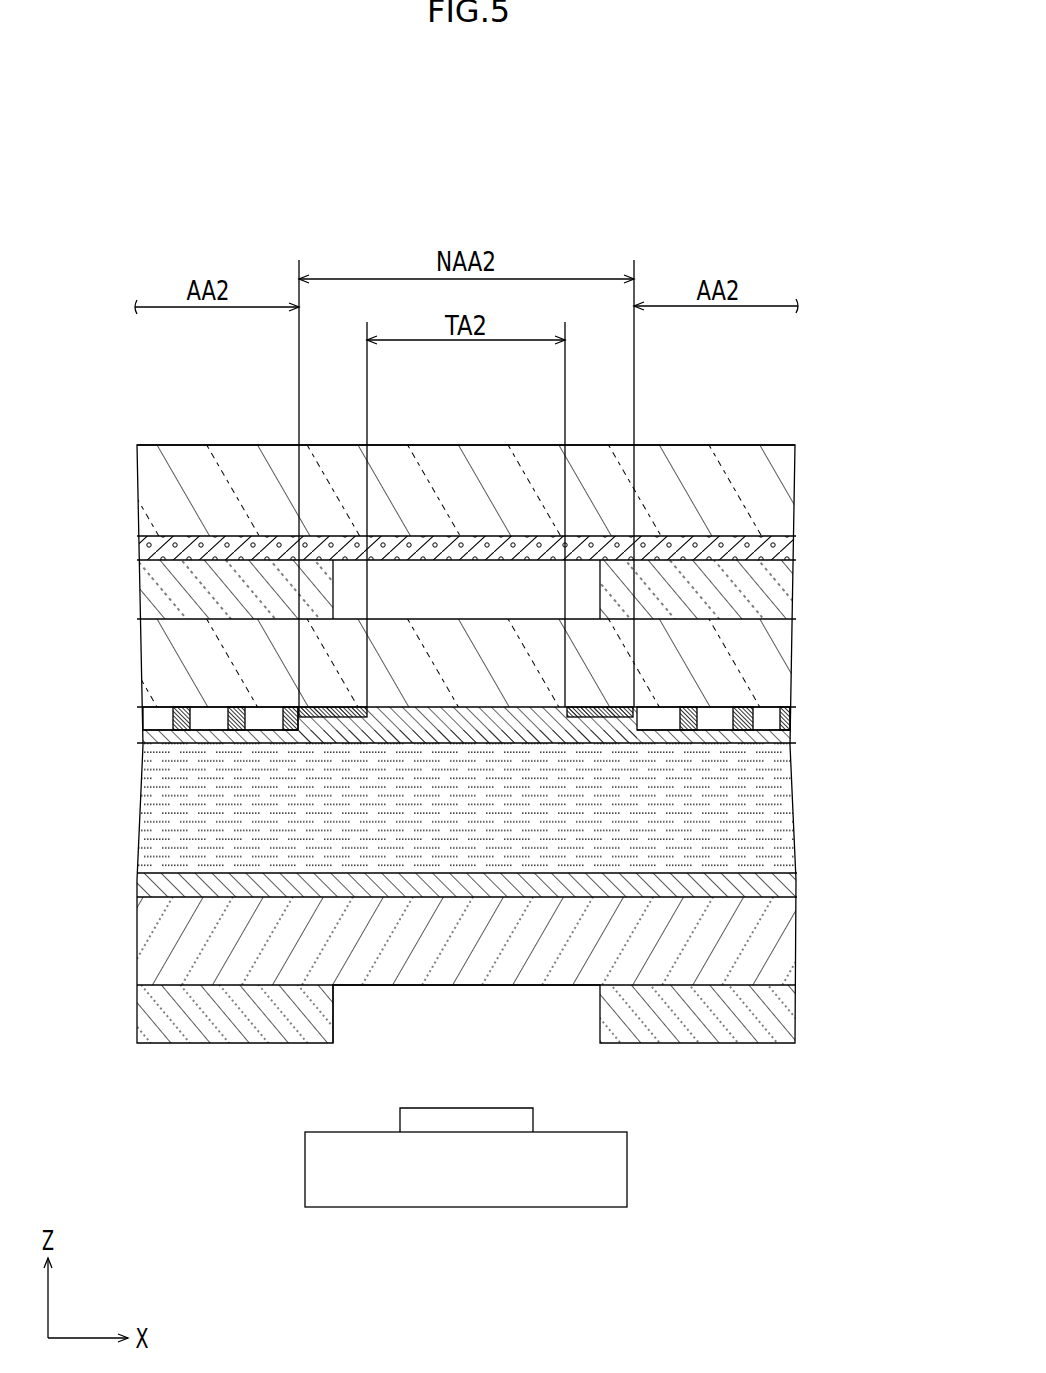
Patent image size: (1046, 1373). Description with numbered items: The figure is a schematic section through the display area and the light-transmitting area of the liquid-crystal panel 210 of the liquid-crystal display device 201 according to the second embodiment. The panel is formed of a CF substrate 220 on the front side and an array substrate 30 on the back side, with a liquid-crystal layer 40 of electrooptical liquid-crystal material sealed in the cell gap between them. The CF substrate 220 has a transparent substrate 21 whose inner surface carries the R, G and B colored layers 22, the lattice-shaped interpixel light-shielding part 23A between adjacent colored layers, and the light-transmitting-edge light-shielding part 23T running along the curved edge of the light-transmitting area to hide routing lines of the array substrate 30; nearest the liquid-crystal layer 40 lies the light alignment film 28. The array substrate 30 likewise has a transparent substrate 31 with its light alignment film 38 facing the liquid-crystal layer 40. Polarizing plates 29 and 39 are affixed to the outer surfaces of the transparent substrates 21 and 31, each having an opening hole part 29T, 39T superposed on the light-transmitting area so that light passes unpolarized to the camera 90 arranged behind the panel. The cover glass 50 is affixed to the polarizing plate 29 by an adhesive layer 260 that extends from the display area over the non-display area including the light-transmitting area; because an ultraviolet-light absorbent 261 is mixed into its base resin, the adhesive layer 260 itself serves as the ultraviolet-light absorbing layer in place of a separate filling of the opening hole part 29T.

The liquid-crystal display device 201 is at (866, 281).
The liquid-crystal panel 210 is at (150, 478).
The cover glass 50 is at (778, 472).
The ultraviolet-light absorbent 261 is at (740, 557).
The adhesive layer 260 is at (785, 550).
The polarizing plate 29 is at (212, 593).
The opening hole part 29T is at (333, 585).
The transparent substrate 21 is at (692, 663).
The CF substrate 220 is at (811, 560).
The light-transmitting-edge light-shielding part 23T is at (305, 700).
The interpixel light-shielding part 23A is at (185, 715).
The colored layer 22 is at (167, 740).
The light alignment film 28 is at (188, 732).
The liquid-crystal layer 40 is at (728, 818).
The light alignment film 38 is at (150, 885).
The array substrate 30 is at (811, 873).
The polarizing plate 39 is at (188, 1020).
The opening hole part 39T is at (337, 1013).
The transparent substrate 31 is at (737, 960).
The camera 90 is at (556, 1182).